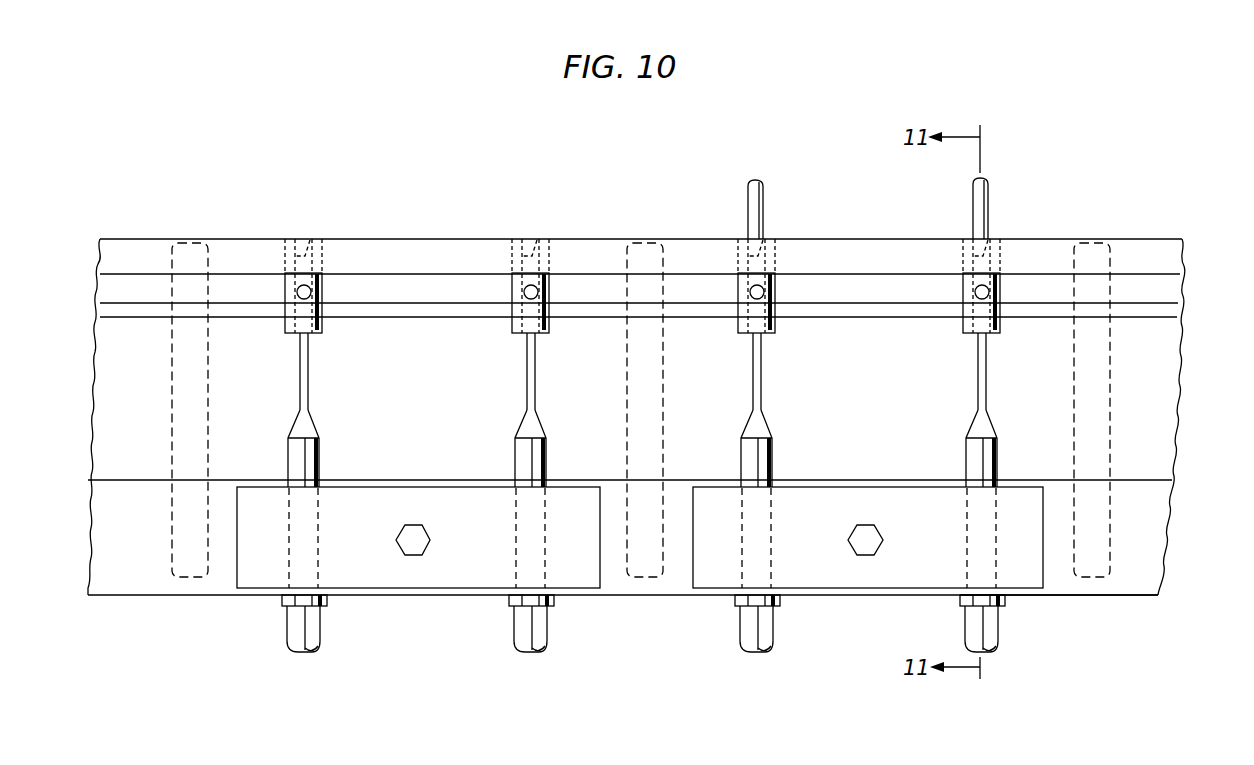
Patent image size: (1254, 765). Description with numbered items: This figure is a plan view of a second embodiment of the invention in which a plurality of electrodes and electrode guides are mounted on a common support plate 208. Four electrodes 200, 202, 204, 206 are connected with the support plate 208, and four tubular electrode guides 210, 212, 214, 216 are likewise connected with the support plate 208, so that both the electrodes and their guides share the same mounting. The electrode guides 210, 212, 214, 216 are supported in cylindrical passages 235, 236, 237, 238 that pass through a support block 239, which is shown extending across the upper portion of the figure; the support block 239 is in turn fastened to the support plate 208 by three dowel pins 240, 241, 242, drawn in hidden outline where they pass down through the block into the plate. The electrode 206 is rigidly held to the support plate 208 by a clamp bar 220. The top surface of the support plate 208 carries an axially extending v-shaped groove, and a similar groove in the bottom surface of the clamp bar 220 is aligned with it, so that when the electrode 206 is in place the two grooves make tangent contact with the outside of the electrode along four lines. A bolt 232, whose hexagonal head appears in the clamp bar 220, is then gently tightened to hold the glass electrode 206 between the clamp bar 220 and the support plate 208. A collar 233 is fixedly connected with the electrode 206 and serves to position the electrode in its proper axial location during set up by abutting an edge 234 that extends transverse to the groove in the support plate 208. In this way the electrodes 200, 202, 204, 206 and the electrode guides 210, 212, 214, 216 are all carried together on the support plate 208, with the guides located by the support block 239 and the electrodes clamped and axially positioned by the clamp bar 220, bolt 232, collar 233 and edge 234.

The electrode 200 is at (319, 442).
The electrode 202 is at (546, 442).
The electrode 204 is at (772, 442).
The electrode 206 is at (997, 442).
The support plate 208 is at (1165, 565).
The electrode guide 210 is at (322, 330).
The electrode guide 212 is at (549, 330).
The electrode guide 214 is at (775, 330).
The electrode guide 216 is at (1000, 330).
The clamp bar 220 is at (1043, 592).
The bolt 232 is at (850, 549).
The collar 233 is at (958, 606).
The edge 234 is at (866, 590).
The cylindrical passage 235 is at (290, 252).
The cylindrical passage 236 is at (515, 252).
The cylindrical passage 237 is at (740, 253).
The cylindrical passage 238 is at (965, 253).
The support block 239 is at (1190, 244).
The dowel pin 240 is at (234, 215).
The dowel pin 241 is at (645, 242).
The dowel pin 242 is at (1183, 212).